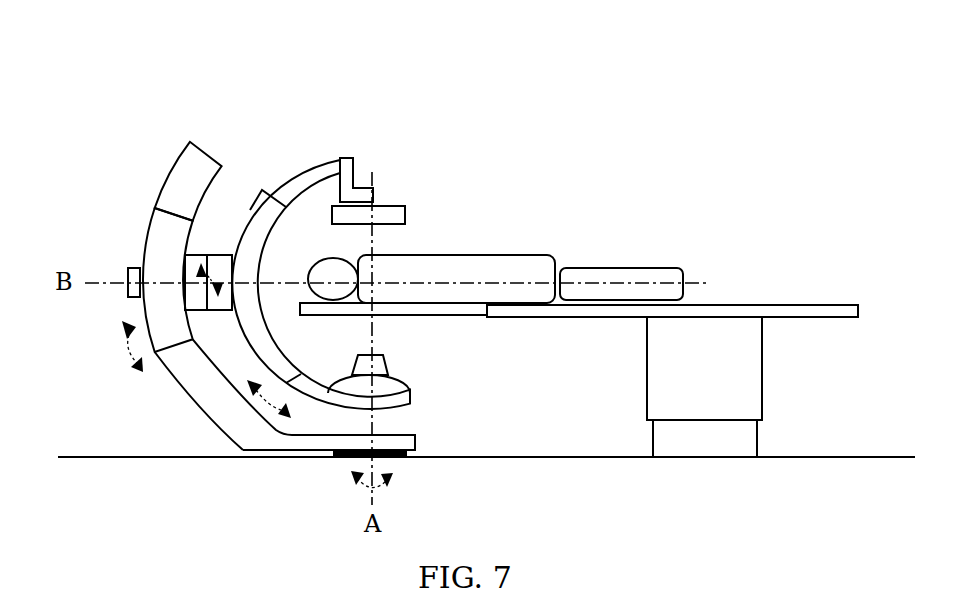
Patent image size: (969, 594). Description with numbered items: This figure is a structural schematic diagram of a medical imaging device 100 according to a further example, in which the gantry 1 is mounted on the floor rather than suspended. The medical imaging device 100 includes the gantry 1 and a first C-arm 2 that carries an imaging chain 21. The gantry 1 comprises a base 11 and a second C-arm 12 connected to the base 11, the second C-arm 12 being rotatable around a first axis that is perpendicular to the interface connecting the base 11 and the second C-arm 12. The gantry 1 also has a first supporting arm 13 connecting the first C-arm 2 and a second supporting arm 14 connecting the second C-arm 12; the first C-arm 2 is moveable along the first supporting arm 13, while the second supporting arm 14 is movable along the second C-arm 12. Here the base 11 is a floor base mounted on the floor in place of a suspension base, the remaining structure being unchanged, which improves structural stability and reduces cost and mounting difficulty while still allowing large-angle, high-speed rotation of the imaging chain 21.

The medical imaging device 100 is at (297, 88).
The gantry 1 is at (218, 427).
The first C-arm 2 is at (300, 172).
The base 11 is at (407, 443).
The second C-arm 12 is at (185, 190).
The first supporting arm 13 is at (260, 218).
The second supporting arm 14 is at (177, 238).
The imaging chain 21 is at (385, 212).